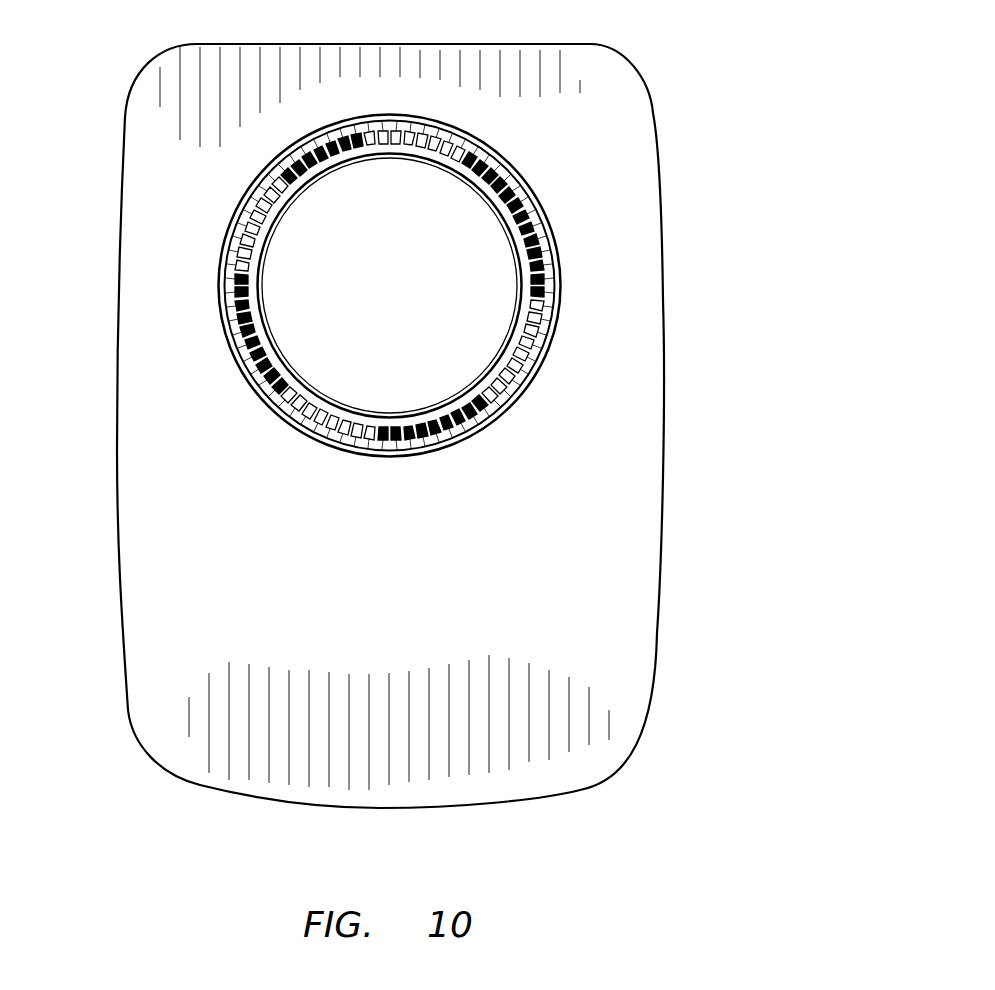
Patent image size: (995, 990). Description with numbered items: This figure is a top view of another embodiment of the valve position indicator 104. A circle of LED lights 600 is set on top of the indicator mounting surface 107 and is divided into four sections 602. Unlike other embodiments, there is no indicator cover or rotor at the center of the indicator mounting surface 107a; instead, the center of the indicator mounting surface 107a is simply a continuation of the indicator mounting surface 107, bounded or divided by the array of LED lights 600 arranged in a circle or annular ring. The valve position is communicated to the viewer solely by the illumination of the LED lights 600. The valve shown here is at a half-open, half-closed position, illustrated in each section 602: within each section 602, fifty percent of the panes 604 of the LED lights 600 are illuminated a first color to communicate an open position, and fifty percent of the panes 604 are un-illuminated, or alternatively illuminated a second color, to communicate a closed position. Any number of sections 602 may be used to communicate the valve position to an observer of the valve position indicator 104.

The valve position indicator 104 is at (416, 426).
The indicator mounting surface 107 is at (662, 220).
The center of indicator mounting surface 107a is at (462, 240).
The LED lights 600 is at (305, 418).
The sections 602 is at (212, 418).
The panes 604 is at (318, 425).